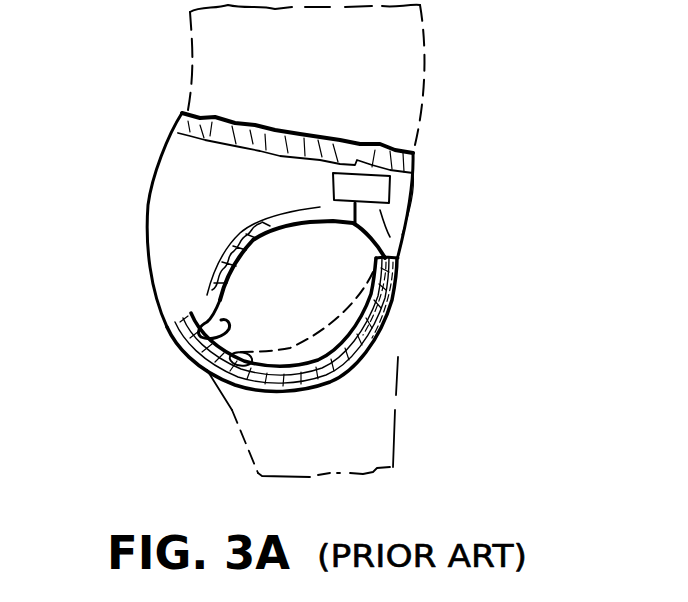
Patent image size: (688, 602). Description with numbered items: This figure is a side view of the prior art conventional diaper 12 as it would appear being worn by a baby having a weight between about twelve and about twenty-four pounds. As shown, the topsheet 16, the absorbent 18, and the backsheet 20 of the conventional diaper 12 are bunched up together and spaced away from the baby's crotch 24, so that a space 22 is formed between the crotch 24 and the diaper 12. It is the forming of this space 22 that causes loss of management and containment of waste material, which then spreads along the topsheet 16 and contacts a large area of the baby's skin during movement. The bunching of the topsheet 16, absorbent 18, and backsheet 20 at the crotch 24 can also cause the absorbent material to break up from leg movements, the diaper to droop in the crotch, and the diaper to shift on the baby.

The conventional diaper 12 is at (495, 172).
The topsheet 16 is at (203, 373).
The absorbent 18 is at (190, 355).
The backsheet 20 is at (272, 390).
The space 22 is at (372, 328).
The crotch 24 is at (217, 317).